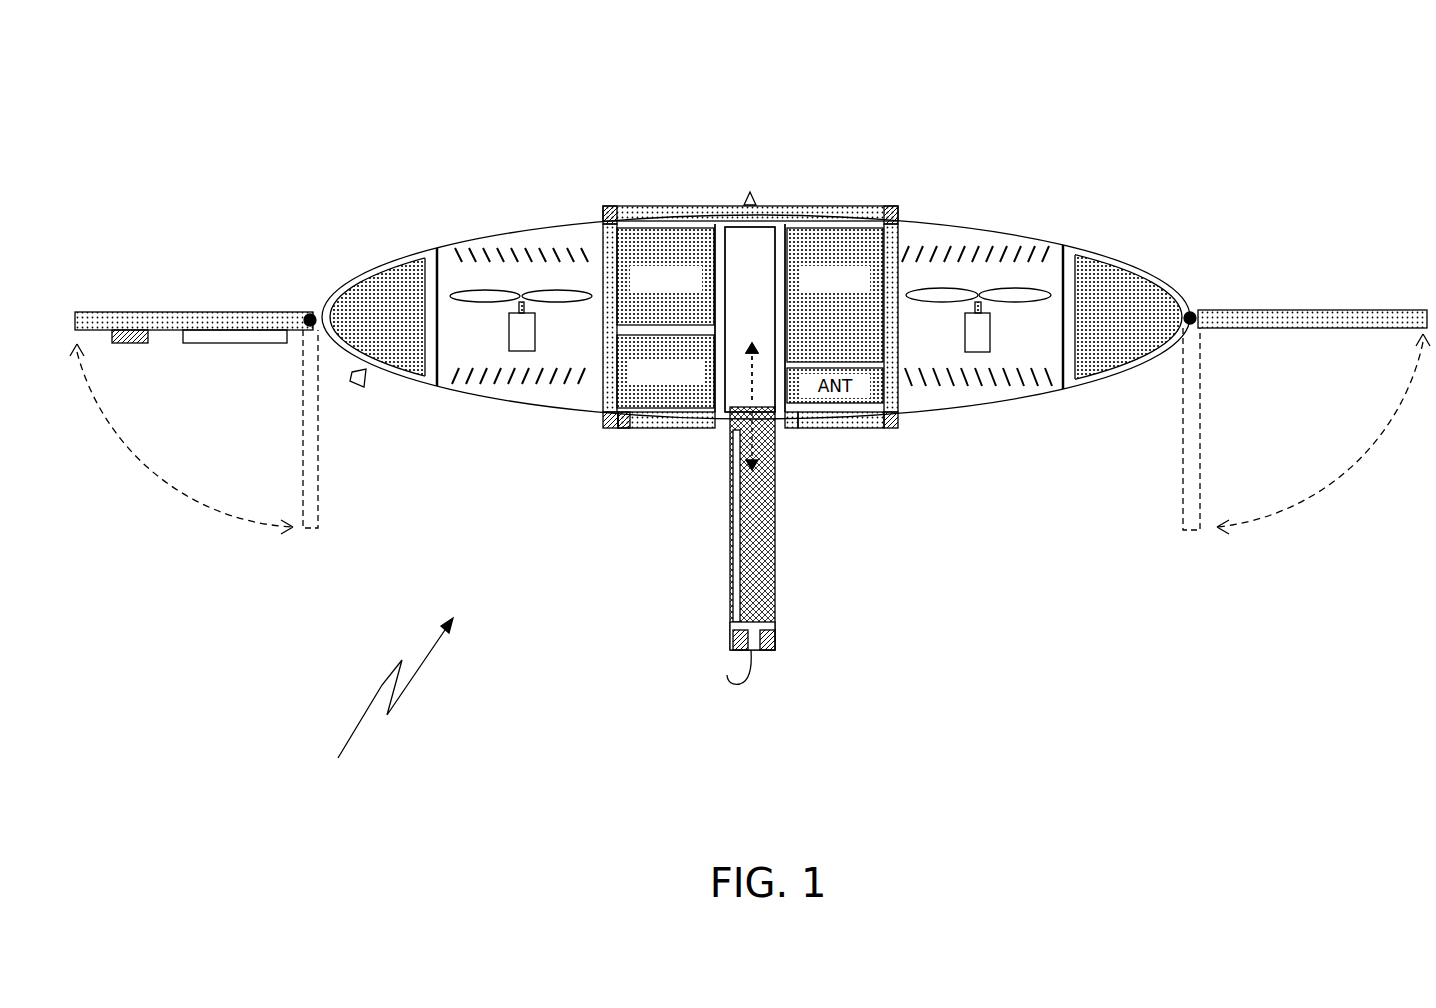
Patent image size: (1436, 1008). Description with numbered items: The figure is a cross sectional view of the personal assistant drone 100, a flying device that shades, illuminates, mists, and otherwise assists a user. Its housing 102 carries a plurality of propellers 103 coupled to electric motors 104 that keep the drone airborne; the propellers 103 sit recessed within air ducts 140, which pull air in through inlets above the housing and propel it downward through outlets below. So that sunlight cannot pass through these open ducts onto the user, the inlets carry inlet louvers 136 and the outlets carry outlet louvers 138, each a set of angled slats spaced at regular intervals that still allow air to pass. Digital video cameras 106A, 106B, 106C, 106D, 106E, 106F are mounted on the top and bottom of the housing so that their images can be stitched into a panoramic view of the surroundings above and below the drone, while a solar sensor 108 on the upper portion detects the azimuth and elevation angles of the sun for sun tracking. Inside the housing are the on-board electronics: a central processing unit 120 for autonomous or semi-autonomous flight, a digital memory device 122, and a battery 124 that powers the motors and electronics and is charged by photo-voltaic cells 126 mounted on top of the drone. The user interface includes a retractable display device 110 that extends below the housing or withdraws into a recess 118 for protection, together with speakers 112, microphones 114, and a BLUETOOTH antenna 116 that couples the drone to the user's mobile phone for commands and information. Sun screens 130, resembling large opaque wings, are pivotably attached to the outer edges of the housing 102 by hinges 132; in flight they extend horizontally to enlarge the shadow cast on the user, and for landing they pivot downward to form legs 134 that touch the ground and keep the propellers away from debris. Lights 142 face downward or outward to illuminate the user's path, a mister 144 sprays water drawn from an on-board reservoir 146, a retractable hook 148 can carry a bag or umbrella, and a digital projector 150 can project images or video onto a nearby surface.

The personal assistant drone 100 is at (375, 703).
The housing 102 is at (417, 242).
The propellers 103 is at (487, 292).
The electric motors 104 is at (521, 352).
The digital video camera 106A is at (607, 206).
The digital video camera 106B is at (892, 206).
The digital video camera 106C is at (608, 430).
The digital video camera 106D is at (890, 430).
The digital video camera 106E is at (733, 648).
The digital video camera 106F is at (777, 640).
The solar sensor 108 is at (750, 192).
The display device 110 is at (717, 578).
The speakers 112 is at (700, 430).
The microphones 114 is at (627, 430).
The BLUETOOTH antenna 116 is at (805, 430).
The recess 118 is at (760, 248).
The central processing unit 120 is at (657, 222).
The digital memory device 122 is at (635, 205).
The battery 124 is at (845, 222).
The photo-voltaic cells 126 is at (695, 208).
The sun screens 130 is at (173, 313).
The hinges 132 is at (310, 316).
The legs 134 is at (322, 505).
The inlet louvers 136 is at (547, 244).
The outlet louvers 138 is at (557, 390).
The air ducts 140 is at (480, 345).
The lights 142 is at (207, 343).
The mister 144 is at (365, 386).
The on-board reservoirs 146 is at (375, 300).
The retractable hook 148 is at (747, 682).
The digital projector 150 is at (130, 343).